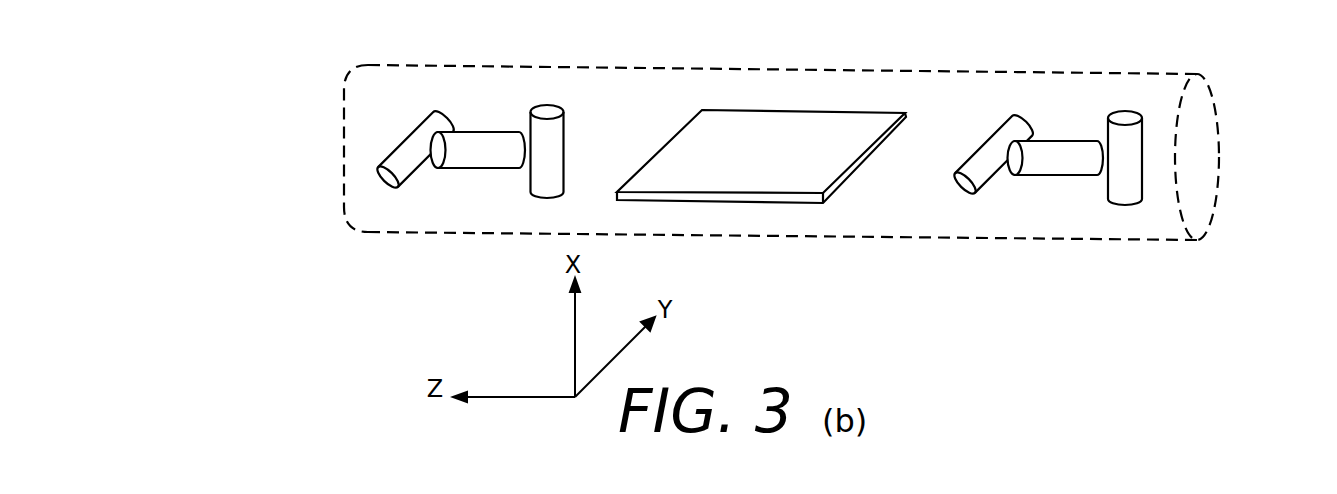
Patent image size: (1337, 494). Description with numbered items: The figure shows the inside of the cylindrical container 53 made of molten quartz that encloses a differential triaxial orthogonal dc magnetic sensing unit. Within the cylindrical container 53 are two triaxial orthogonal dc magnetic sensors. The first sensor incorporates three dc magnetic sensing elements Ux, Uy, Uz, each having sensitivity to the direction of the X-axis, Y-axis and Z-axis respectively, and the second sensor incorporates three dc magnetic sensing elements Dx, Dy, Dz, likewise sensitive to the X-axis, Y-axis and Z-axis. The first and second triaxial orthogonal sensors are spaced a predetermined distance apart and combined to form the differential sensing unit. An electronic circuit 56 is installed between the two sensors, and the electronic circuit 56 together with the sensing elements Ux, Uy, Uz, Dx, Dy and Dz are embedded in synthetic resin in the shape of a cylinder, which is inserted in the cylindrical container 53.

The cylindrical container 53 is at (762, 69).
The electronic circuit 56 is at (801, 182).
The dc magnetic sensing element Dx is at (558, 130).
The dc magnetic sensing element Dy is at (437, 113).
The dc magnetic sensing element Dz is at (490, 141).
The dc magnetic sensing element Ux is at (1128, 121).
The dc magnetic sensing element Uy is at (1022, 122).
The dc magnetic sensing element Uz is at (1067, 162).